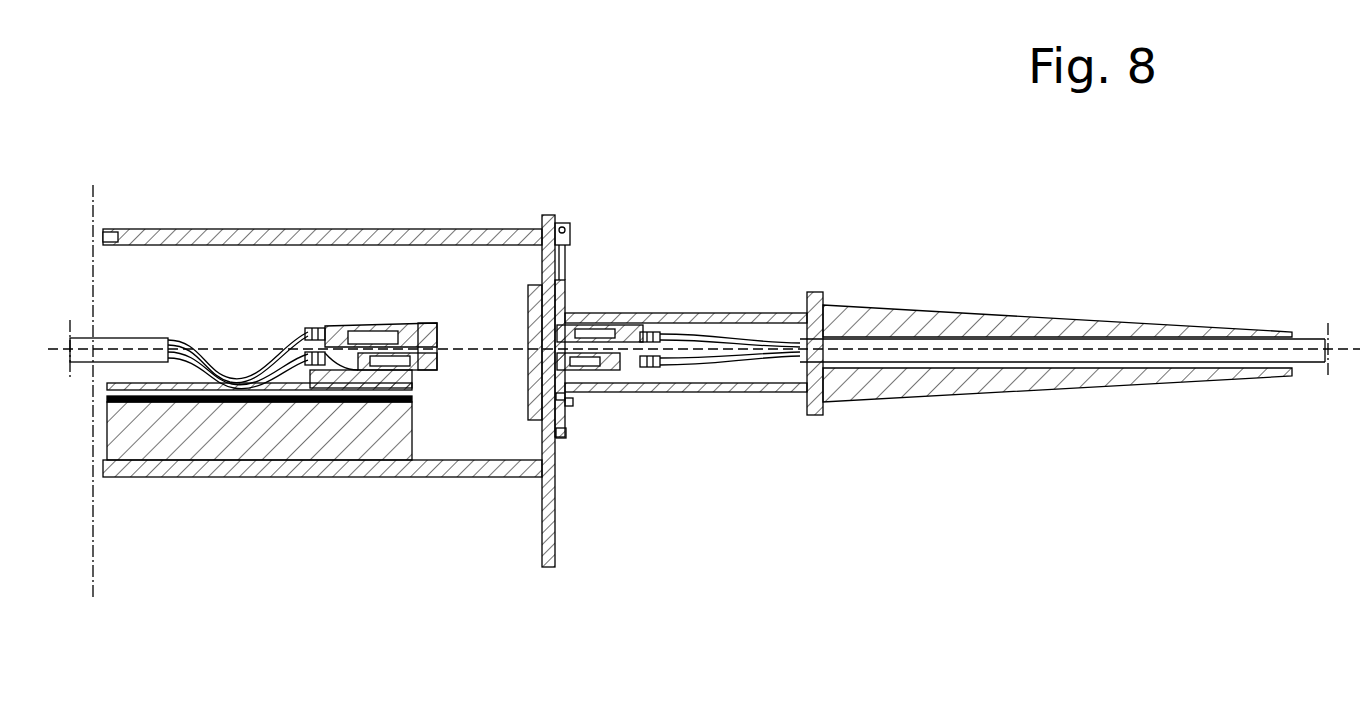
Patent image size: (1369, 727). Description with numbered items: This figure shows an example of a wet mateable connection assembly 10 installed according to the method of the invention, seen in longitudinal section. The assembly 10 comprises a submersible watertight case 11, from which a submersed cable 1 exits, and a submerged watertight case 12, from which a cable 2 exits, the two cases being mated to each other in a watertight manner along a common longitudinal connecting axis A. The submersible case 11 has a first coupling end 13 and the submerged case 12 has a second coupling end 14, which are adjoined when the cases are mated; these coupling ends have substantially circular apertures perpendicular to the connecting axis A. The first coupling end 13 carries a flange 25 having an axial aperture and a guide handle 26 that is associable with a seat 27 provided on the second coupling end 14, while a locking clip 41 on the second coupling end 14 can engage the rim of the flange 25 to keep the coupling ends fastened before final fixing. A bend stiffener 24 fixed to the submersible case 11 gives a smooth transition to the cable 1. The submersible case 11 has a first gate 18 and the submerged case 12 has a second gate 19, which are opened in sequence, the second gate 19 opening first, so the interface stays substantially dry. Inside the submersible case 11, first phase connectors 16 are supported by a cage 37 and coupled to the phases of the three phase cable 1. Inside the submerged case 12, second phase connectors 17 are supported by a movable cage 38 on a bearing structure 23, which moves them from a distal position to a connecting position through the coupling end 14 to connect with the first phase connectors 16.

The submersed cable 1 is at (1293, 350).
The cable 2 is at (120, 348).
The wet mateable connection assembly 10 is at (770, 158).
The submersible watertight case 11 is at (758, 316).
The submerged watertight case 12 is at (318, 229).
The first coupling end 13 is at (578, 289).
The second coupling end 14 is at (548, 210).
The first phase connectors 16 is at (645, 315).
The second phase connectors 17 is at (367, 312).
The first gate 18 is at (560, 393).
The second gate 19 is at (538, 348).
The bearing structure 23 is at (293, 385).
The bend stiffener 24 is at (1018, 316).
The flange 25 is at (565, 430).
The guide handle 26 is at (565, 226).
The seat 27 is at (572, 240).
The cage 37 is at (598, 370).
The movable cage 38 is at (373, 350).
The locking clip 41 is at (565, 440).
The connecting axis A is at (1078, 350).